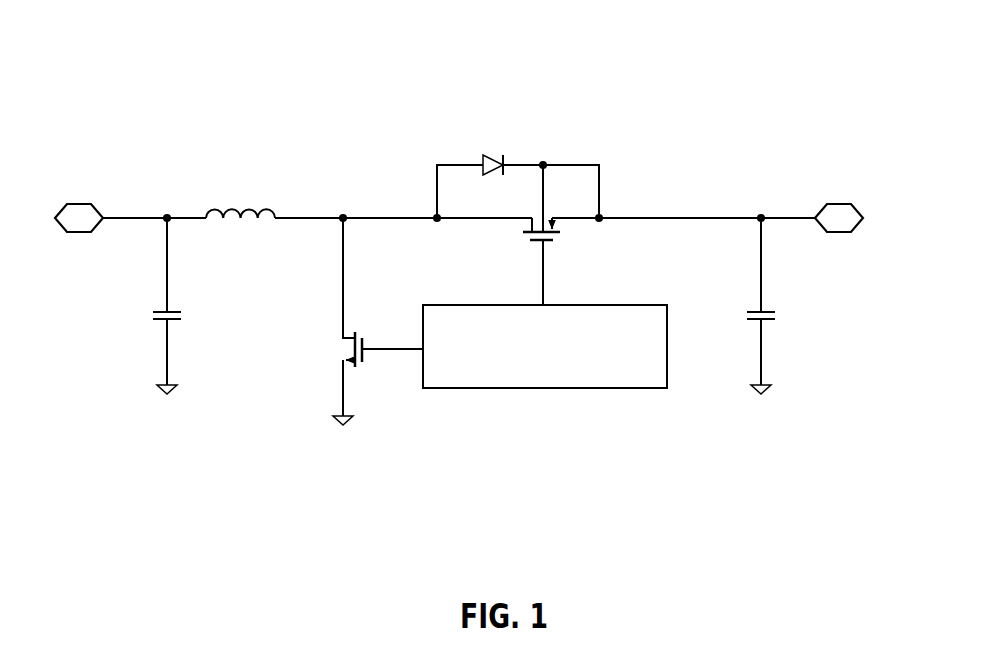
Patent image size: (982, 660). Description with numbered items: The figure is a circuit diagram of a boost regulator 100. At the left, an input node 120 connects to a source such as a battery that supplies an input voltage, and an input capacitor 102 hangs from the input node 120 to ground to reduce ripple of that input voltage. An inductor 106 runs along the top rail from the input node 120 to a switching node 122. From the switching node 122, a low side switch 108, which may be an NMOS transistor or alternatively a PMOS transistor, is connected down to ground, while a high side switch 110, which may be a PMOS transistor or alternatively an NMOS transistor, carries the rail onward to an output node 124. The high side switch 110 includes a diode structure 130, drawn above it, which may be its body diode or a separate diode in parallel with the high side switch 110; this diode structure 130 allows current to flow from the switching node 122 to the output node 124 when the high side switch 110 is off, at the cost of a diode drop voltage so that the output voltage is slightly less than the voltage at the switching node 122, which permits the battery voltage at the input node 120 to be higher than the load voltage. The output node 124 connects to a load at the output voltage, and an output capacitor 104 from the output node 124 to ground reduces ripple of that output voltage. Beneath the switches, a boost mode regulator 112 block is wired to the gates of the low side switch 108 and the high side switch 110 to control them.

The boost regulator 100 is at (844, 551).
The input capacitor 102 is at (136, 298).
The output capacitor 104 is at (790, 337).
The inductor 106 is at (260, 190).
The low side switch 108 is at (327, 336).
The high side switch 110 is at (558, 249).
The boost mode regulator 112 is at (655, 383).
The input node 120 is at (180, 190).
The switching node 122 is at (355, 190).
The output node 124 is at (773, 190).
The diode structure 130 is at (503, 135).